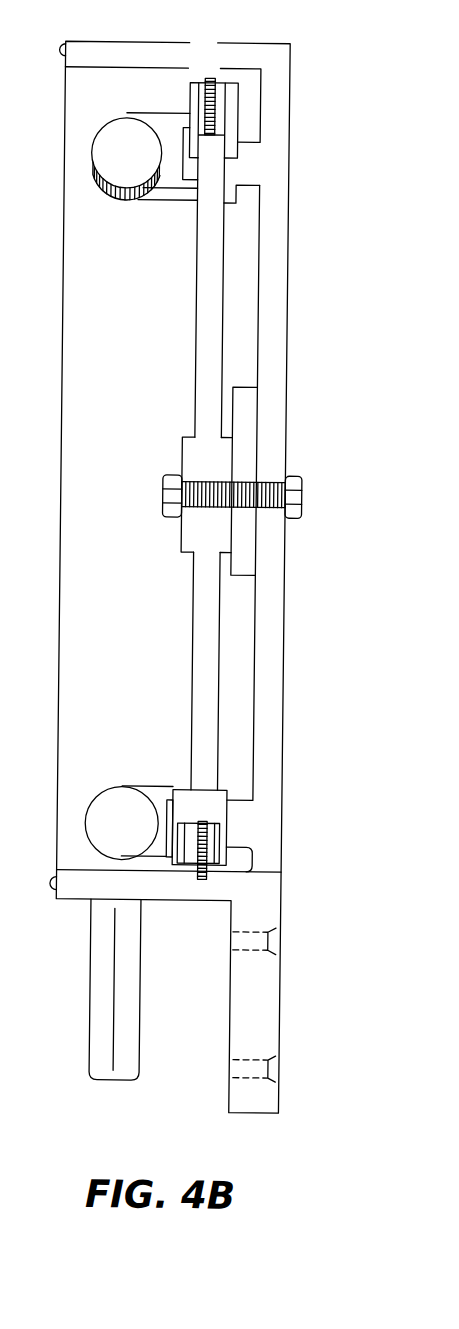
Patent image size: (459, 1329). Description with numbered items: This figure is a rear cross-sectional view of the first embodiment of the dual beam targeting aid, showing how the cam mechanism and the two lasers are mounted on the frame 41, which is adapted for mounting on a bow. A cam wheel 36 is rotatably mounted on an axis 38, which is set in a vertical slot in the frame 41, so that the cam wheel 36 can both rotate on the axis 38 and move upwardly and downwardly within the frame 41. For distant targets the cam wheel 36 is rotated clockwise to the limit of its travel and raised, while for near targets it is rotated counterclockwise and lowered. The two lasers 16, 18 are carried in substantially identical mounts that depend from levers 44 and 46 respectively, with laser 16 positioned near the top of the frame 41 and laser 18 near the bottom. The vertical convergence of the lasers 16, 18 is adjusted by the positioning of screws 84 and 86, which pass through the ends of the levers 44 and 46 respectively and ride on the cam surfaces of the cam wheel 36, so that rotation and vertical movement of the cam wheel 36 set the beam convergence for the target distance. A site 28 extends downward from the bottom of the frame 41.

The laser 16 is at (120, 201).
The laser 18 is at (131, 786).
The site 28 is at (146, 983).
The cam wheel 36 is at (194, 372).
The axis 38 is at (304, 497).
The frame 41 is at (287, 328).
The lever 44 is at (218, 48).
The lever 46 is at (232, 833).
The screw 84 is at (217, 66).
The screw 86 is at (212, 877).